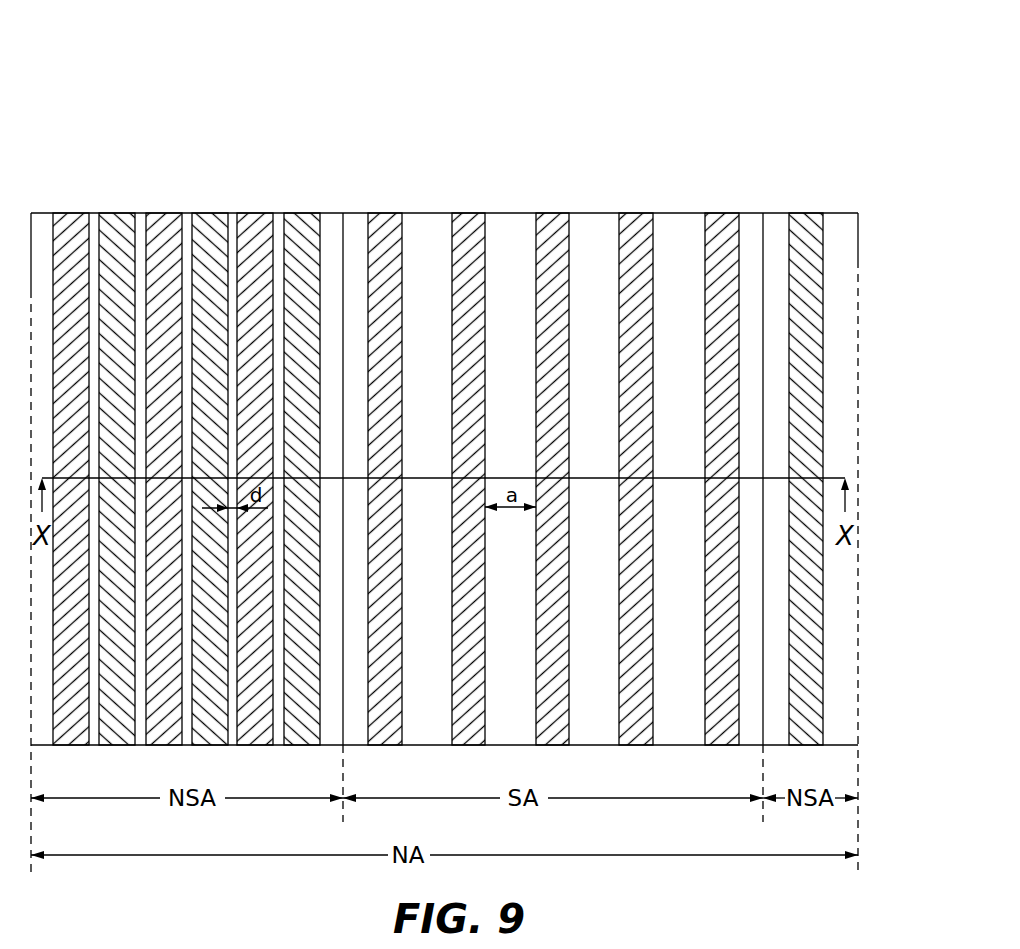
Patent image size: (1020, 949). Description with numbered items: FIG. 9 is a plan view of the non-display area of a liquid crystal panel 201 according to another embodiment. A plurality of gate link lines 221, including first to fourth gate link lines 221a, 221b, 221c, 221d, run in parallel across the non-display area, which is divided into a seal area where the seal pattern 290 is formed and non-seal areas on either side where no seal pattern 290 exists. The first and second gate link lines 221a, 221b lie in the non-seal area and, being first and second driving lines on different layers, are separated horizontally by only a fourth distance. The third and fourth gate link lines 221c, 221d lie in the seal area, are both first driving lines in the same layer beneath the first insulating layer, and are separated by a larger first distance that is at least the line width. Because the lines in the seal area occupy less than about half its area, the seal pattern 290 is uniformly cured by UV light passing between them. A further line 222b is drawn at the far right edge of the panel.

The liquid crystal panel 201 is at (468, 439).
The gate link lines 221 is at (464, 396).
The first gate link line 221a is at (250, 213).
The second gate link line 221b is at (298, 213).
The third gate link line 221c is at (557, 213).
The fourth gate link line 221d is at (655, 436).
The seal pattern 290 is at (763, 213).
The second electrode 222b is at (803, 213).